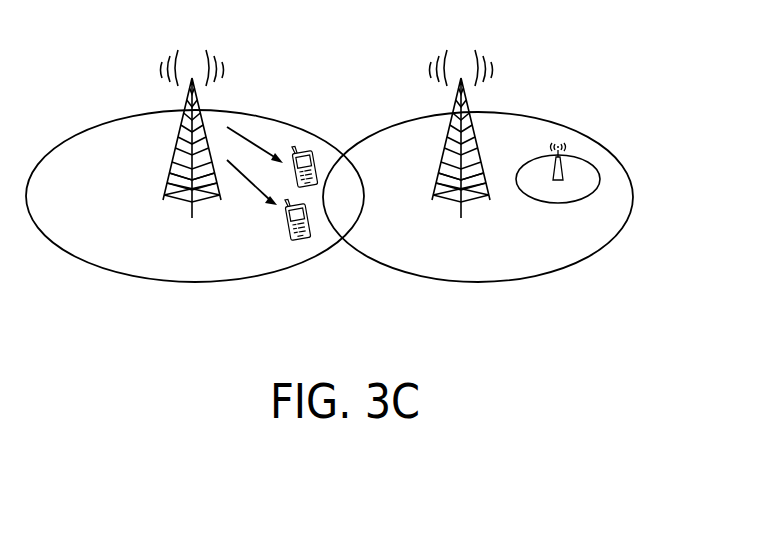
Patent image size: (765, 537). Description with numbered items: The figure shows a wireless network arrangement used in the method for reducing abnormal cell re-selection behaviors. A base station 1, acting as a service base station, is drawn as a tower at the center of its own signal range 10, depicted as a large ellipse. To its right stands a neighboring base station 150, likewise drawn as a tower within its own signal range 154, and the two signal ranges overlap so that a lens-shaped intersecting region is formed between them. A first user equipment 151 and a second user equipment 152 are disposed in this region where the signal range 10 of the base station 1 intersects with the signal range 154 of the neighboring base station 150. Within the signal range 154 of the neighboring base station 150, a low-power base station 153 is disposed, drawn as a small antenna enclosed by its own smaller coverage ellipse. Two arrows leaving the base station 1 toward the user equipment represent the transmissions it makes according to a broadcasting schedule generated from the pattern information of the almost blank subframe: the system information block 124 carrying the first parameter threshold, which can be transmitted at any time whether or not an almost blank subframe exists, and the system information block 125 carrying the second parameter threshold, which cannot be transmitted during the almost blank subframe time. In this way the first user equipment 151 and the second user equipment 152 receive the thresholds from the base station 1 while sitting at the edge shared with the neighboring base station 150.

The base station 1 is at (175, 148).
The signal range 10 is at (93, 128).
The system information block 124 is at (252, 147).
The system information block 125 is at (253, 182).
The neighboring base station 150 is at (477, 137).
The first user equipment 151 is at (310, 155).
The second user equipment 152 is at (297, 240).
The low-power base station 153 is at (565, 165).
The signal range 154 is at (543, 122).